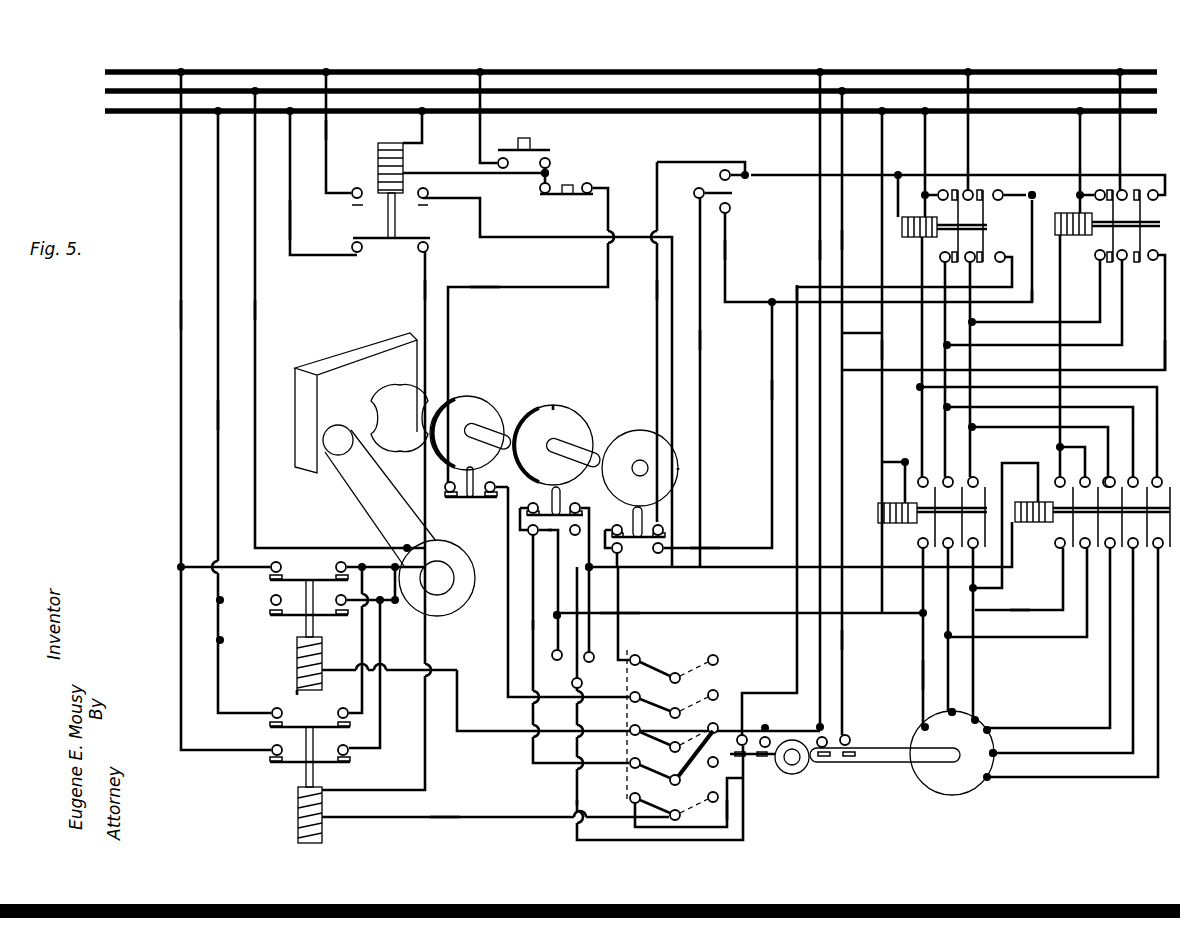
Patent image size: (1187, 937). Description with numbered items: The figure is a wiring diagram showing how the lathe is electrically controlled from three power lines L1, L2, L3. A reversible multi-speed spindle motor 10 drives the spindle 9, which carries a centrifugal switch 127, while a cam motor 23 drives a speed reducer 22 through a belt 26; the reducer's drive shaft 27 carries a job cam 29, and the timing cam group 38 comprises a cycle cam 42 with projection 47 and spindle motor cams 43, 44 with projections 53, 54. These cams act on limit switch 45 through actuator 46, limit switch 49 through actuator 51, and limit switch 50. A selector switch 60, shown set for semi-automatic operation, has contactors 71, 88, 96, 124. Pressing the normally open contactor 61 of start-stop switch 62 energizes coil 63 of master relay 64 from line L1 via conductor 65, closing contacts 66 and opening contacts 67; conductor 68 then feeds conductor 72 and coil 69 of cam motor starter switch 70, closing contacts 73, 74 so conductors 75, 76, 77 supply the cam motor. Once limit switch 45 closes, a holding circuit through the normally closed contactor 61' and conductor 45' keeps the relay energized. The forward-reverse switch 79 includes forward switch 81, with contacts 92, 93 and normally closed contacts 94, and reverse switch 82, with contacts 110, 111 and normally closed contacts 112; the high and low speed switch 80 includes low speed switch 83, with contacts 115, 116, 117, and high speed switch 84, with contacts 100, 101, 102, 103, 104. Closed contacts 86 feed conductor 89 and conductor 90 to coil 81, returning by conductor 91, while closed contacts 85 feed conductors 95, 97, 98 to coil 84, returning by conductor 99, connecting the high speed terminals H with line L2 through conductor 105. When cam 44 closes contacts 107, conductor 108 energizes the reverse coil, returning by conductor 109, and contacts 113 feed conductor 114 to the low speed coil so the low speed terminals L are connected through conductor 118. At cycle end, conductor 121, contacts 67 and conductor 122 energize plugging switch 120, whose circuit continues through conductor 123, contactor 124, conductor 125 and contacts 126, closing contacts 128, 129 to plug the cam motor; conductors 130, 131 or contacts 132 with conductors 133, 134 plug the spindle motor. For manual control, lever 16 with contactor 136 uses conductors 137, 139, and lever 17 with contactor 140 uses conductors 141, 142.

The power line L1 is at (105, 74).
The power line L2 is at (105, 93).
The power line L3 is at (105, 113).
The spindle 9 is at (878, 746).
The spindle motor 10 is at (960, 796).
The lever 16 is at (717, 170).
The lever 17 is at (575, 672).
The speed reducer 22 is at (352, 355).
The electric motor 23 is at (438, 620).
The belt 26 is at (347, 495).
The drive shaft 27 is at (491, 410).
The cam 29 is at (409, 380).
The cam assembly 38 is at (551, 357).
The cycle cam 42 is at (451, 395).
The spindle motor controlling cam 43 is at (561, 420).
The spindle motor controlling cam 44 is at (626, 437).
The limit switch 45 is at (475, 526).
The conductor 45' is at (480, 274).
The actuator 46 is at (486, 486).
The projection 47 is at (472, 475).
The limit switch 49 is at (532, 505).
The limit switch 50 is at (626, 521).
The actuator 51 is at (556, 486).
The projection 53 is at (551, 392).
The projection 54 is at (676, 455).
The selector switch 60 is at (745, 665).
The contactor 61 is at (536, 143).
The contactor 61' is at (570, 203).
The start-stop switch 62 is at (540, 180).
The coil 63 is at (380, 150).
The master relay 64 is at (345, 210).
The conductor 65 is at (478, 150).
The contacts 66 is at (357, 188).
The contacts 67 is at (395, 252).
The conductor 68 is at (326, 150).
The coil 69 is at (297, 672).
The cam motor starter switch 70 is at (282, 655).
The contactor 71 is at (662, 697).
The conductor 72 is at (221, 422).
The contacts 73 is at (334, 567).
The contacts 74 is at (292, 601).
The conductor 75 is at (181, 316).
The conductor 76 is at (252, 598).
The conductor 77 is at (258, 313).
The forward-reverse switch 79 is at (1040, 156).
The high and low speed switch 80 is at (1030, 598).
The forward electromagnetic switch 81 is at (920, 242).
The reverse electromagnetic switch 82 is at (1082, 242).
The low speed electromagnetic switch 83 is at (880, 502).
The high speed electromagnetic switch 84 is at (1032, 502).
The contacts 85 is at (572, 508).
The contacts 86 is at (663, 530).
The contactor 88 is at (660, 645).
The conductor 89 is at (618, 611).
The conductor 90 is at (655, 296).
The conductor 91 is at (964, 185).
The contacts 92 is at (922, 190).
The contacts 93 is at (994, 187).
The contacts 94 is at (1002, 252).
The conductor 95 is at (815, 248).
The contactor 96 is at (661, 775).
The conductor 97 is at (530, 626).
The conductor 98 is at (587, 567).
The conductor 99 is at (882, 356).
The contacts 100 is at (1056, 539).
The contacts 101 is at (1078, 548).
The contacts 102 is at (1108, 472).
The contacts 103 is at (1130, 472).
The contacts 104 is at (1152, 472).
The conductor 105 is at (842, 235).
The contacts 107 is at (700, 549).
The conductor 108 is at (1036, 300).
The conductor 109 is at (1100, 185).
The contacts 110 is at (1108, 186).
The contacts 111 is at (1124, 185).
The contacts 112 is at (1153, 186).
The contacts 113 is at (546, 536).
The conductor 114 is at (559, 612).
The contacts 115 is at (918, 536).
The contacts 116 is at (940, 548).
The contacts 117 is at (979, 479).
The conductor 118 is at (923, 673).
The plugging switch 120 is at (295, 800).
The conductor 121 is at (290, 218).
The conductor 122 is at (425, 292).
The conductor 123 is at (446, 818).
The contactor 124 is at (659, 805).
The conductor 125 is at (736, 815).
The contacts 126 is at (762, 776).
The centrifugal switch 127 is at (806, 771).
The contacts 128 is at (336, 716).
The contacts 129 is at (270, 750).
The conductor 130 is at (797, 285).
The conductor 131 is at (1033, 195).
The contacts 132 is at (851, 760).
The conductor 133 is at (1130, 362).
The conductor 134 is at (1017, 180).
The contactor 136 is at (735, 195).
The conductor 137 is at (704, 343).
The conductor 139 is at (727, 248).
The contactor 140 is at (589, 652).
The conductor 141 is at (578, 800).
The conductor 142 is at (596, 585).
The high speed motor terminals H is at (1003, 742).
The low speed motor terminals L is at (960, 692).